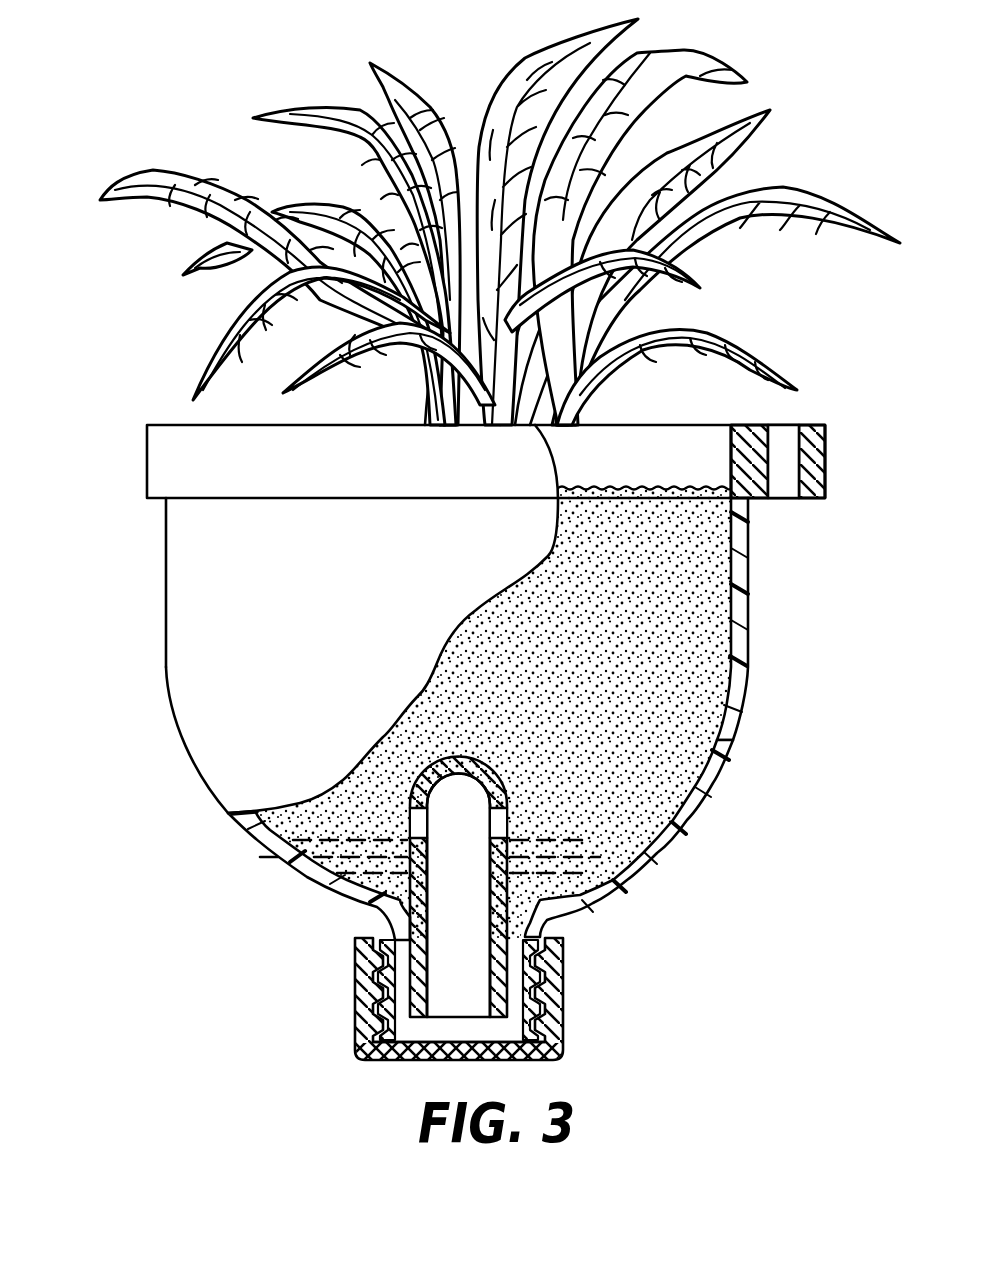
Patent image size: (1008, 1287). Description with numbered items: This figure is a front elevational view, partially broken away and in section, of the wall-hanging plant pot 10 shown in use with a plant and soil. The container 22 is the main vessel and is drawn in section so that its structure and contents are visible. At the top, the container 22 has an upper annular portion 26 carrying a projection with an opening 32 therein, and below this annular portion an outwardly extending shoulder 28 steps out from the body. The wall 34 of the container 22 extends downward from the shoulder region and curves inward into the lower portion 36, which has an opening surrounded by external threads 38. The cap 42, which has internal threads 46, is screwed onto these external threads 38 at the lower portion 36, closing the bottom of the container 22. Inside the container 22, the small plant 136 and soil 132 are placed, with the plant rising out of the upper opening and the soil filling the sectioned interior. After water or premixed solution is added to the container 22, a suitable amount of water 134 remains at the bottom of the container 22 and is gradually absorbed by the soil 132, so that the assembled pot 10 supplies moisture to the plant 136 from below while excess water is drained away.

The wall-hanging plant pot 10 is at (153, 389).
The container 22 is at (161, 602).
The upper annular portion 26 is at (825, 450).
The outwardly extending shoulder 28 is at (160, 500).
The opening 32 is at (787, 425).
The wall 34 is at (750, 672).
The lower portion 36 is at (583, 895).
The external threads 38 is at (533, 1013).
The cap 42 is at (353, 1005).
The internal threads 46 is at (386, 1000).
The soil 132 is at (623, 723).
The water 134 is at (340, 863).
The small plant 136 is at (303, 108).